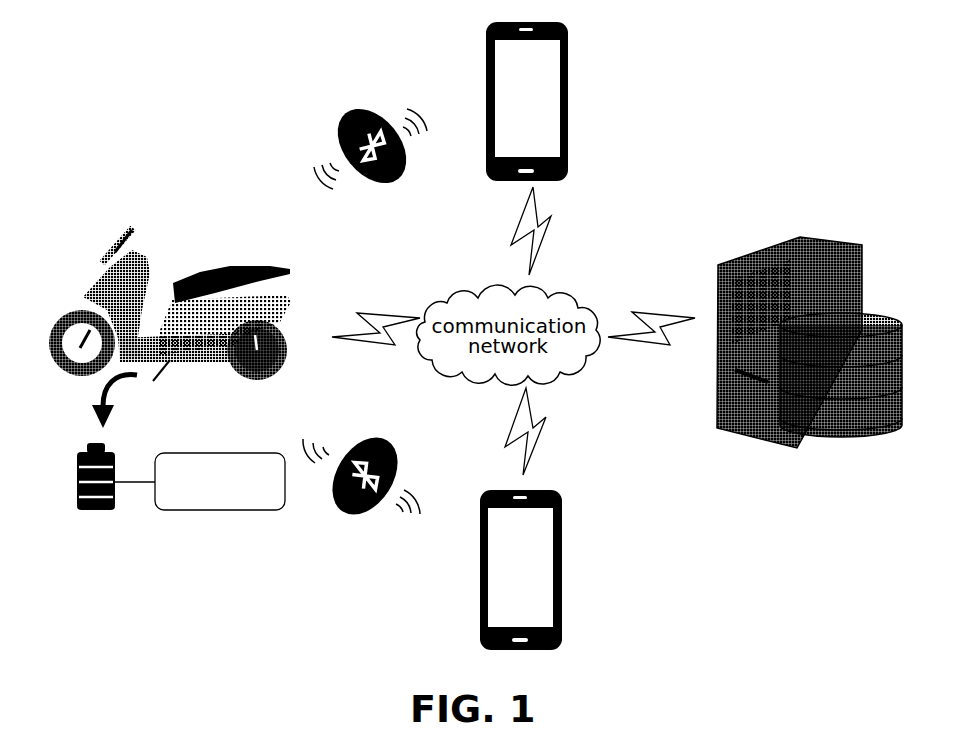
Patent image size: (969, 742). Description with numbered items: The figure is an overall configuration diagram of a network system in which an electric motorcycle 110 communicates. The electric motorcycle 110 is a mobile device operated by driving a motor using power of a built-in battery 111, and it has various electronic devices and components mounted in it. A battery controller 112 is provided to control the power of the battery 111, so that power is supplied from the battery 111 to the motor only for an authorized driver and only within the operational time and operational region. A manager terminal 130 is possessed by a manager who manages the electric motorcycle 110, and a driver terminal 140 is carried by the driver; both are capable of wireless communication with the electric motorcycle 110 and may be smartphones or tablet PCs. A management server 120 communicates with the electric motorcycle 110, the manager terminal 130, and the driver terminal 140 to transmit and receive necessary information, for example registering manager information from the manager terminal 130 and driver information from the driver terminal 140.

The electric motorcycle 110 is at (253, 270).
The battery 111 is at (92, 510).
The battery controller 112 is at (222, 510).
The management server 120 is at (798, 234).
The manager terminal 130 is at (568, 104).
The driver terminal 140 is at (562, 550).